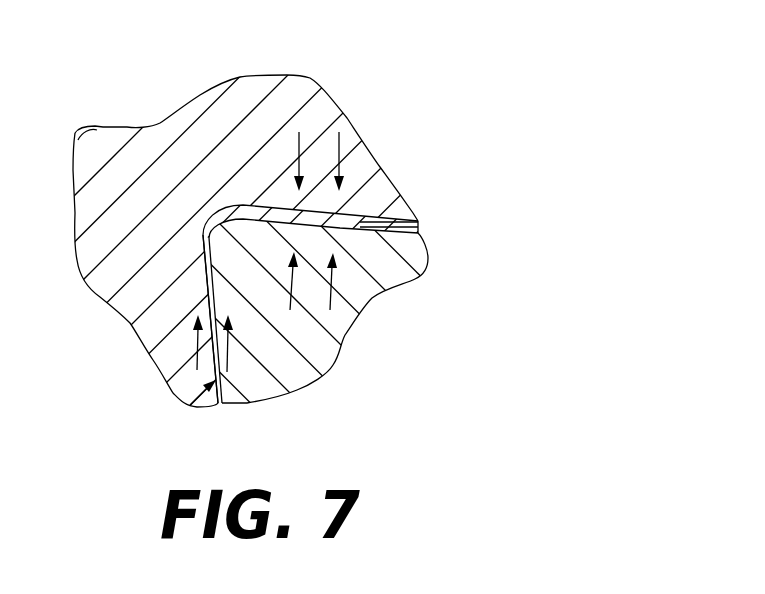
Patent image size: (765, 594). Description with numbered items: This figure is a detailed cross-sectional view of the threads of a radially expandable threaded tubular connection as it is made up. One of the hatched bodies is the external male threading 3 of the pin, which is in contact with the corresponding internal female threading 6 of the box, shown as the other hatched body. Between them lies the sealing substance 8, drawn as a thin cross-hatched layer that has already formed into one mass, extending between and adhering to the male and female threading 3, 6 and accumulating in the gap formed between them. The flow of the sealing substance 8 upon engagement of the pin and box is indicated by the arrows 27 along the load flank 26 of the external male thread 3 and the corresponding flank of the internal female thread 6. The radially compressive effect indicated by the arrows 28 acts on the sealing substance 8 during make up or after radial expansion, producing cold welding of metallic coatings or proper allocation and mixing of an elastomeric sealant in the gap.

The internal female threading 6 is at (217, 135).
The external male threading 3 is at (362, 290).
The sealing substance 8 is at (420, 230).
The load flank 26 is at (190, 405).
The arrows indicating flow of sealing substance 27 is at (205, 345).
The arrows indicating radially compressive effect 28 is at (339, 148).